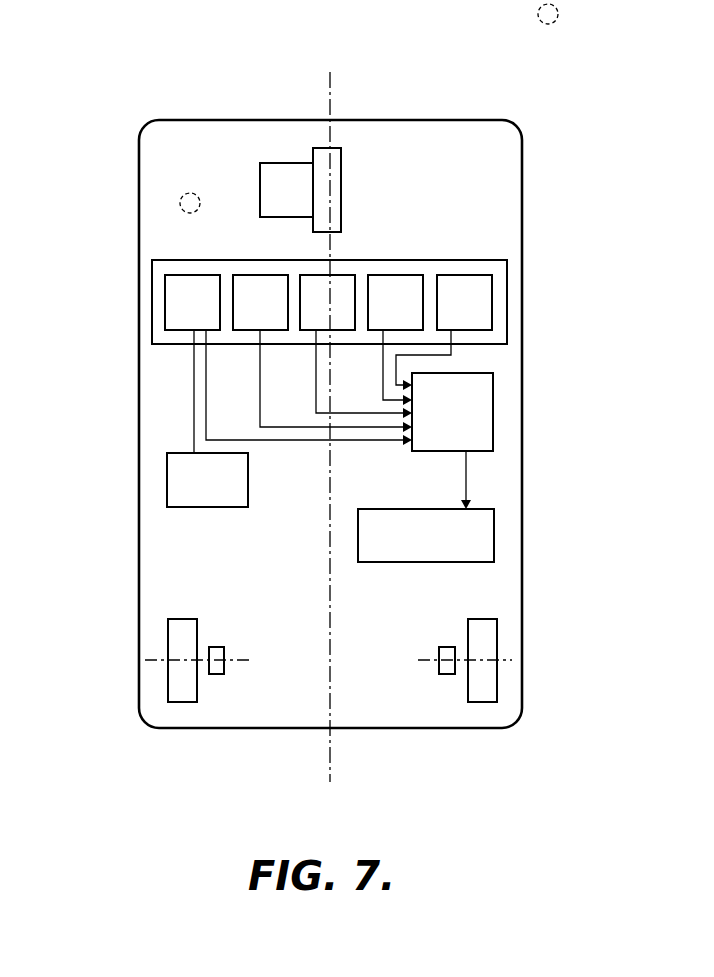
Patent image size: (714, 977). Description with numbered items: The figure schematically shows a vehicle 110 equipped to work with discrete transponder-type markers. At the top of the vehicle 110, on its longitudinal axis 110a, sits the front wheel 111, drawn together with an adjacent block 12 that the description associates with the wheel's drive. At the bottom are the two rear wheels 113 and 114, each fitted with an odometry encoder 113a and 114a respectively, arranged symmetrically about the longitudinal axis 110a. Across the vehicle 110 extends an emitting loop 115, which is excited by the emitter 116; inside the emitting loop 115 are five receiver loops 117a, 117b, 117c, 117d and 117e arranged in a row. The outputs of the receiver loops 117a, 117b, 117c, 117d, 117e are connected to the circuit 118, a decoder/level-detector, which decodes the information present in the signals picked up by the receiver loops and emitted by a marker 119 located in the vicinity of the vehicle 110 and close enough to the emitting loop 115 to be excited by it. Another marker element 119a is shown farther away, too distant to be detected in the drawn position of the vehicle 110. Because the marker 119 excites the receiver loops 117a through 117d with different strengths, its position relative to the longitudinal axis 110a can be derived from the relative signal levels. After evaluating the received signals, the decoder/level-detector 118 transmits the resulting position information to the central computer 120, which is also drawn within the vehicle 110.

The connector 12 is at (274, 162).
The front wheel 111 is at (335, 160).
The marker 119 is at (178, 202).
The marker element 119a is at (539, 15).
The emitting loop 115 is at (508, 292).
The receiver loop 117a is at (173, 303).
The receiver loop 117b is at (248, 258).
The receiver loop 117c is at (352, 258).
The receiver loop 117d is at (415, 258).
The receiver loop 117e is at (478, 258).
The decoder/level-detector circuit 118 is at (482, 405).
The emitter 116 is at (178, 480).
The central computer 120 is at (483, 547).
The vehicle 110 is at (529, 467).
The longitudinal axis 110a is at (332, 623).
The rear wheel 113 is at (183, 690).
The odometry encoder 113a is at (219, 672).
The rear wheel 114 is at (483, 695).
The odometry encoder 114a is at (445, 672).